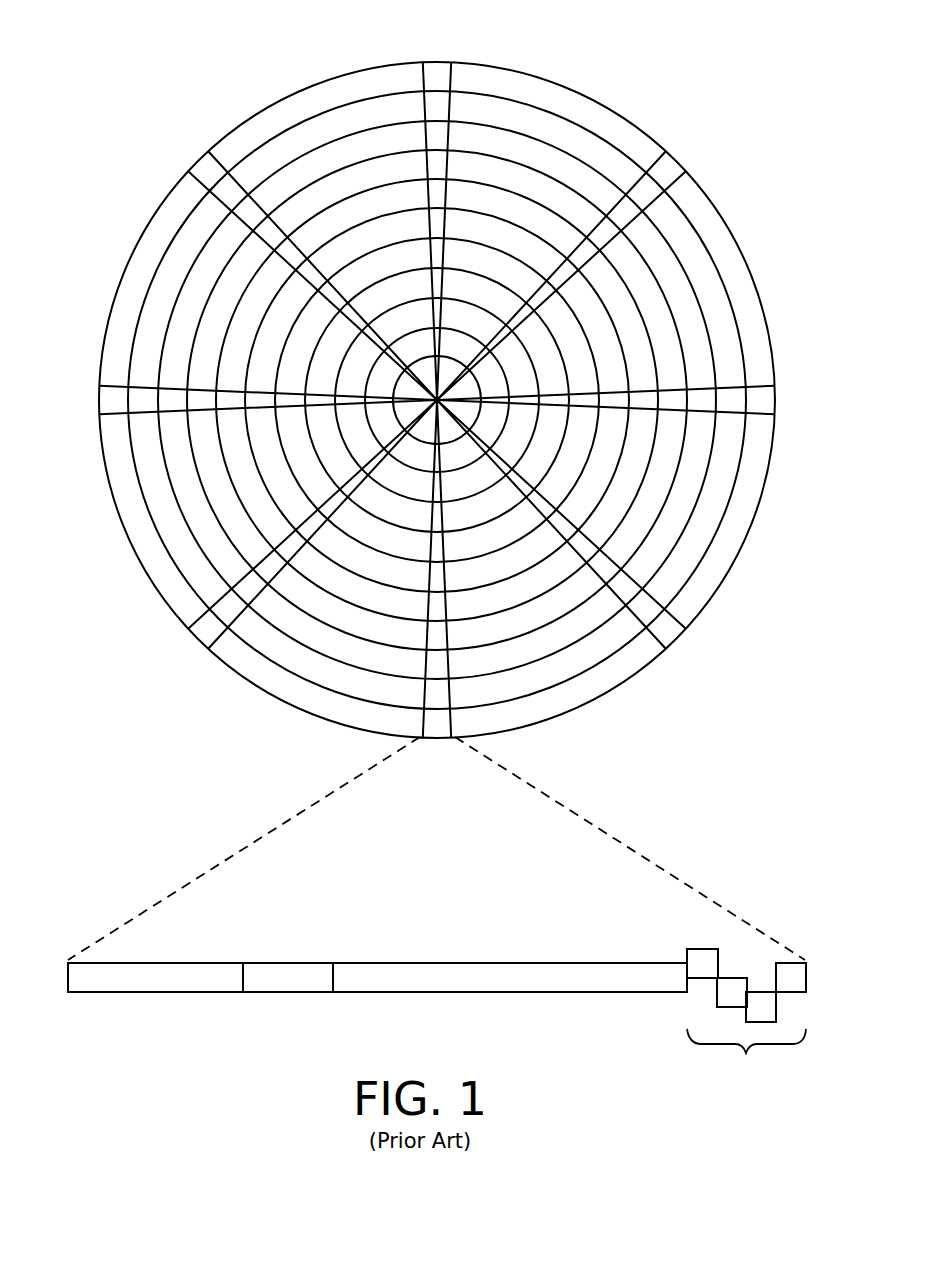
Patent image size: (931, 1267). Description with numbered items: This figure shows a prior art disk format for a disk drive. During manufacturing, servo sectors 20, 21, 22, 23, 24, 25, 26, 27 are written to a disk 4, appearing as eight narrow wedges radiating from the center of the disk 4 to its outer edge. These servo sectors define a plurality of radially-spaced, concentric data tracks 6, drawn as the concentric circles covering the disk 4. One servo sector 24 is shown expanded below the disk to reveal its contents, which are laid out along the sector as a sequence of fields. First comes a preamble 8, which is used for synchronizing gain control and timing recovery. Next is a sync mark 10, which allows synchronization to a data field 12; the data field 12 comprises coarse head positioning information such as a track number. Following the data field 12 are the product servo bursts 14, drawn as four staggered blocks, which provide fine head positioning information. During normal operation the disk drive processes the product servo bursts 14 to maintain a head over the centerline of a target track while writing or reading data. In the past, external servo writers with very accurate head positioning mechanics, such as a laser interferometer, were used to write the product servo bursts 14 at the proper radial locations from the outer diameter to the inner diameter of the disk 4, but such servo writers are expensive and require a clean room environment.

The disk 4 is at (185, 67).
The data tracks 6 is at (550, 132).
The servo sector 20 is at (438, 76).
The servo sector 21 is at (670, 171).
The servo sector 22 is at (770, 401).
The servo sector 23 is at (669, 628).
The servo sector 24 is at (287, 810).
The servo sector 25 is at (200, 632).
The servo sector 26 is at (103, 400).
The servo sector 27 is at (205, 170).
The preamble 8 is at (138, 986).
The sync mark 10 is at (287, 986).
The data field 12 is at (497, 986).
The product servo bursts 14 is at (675, 932).